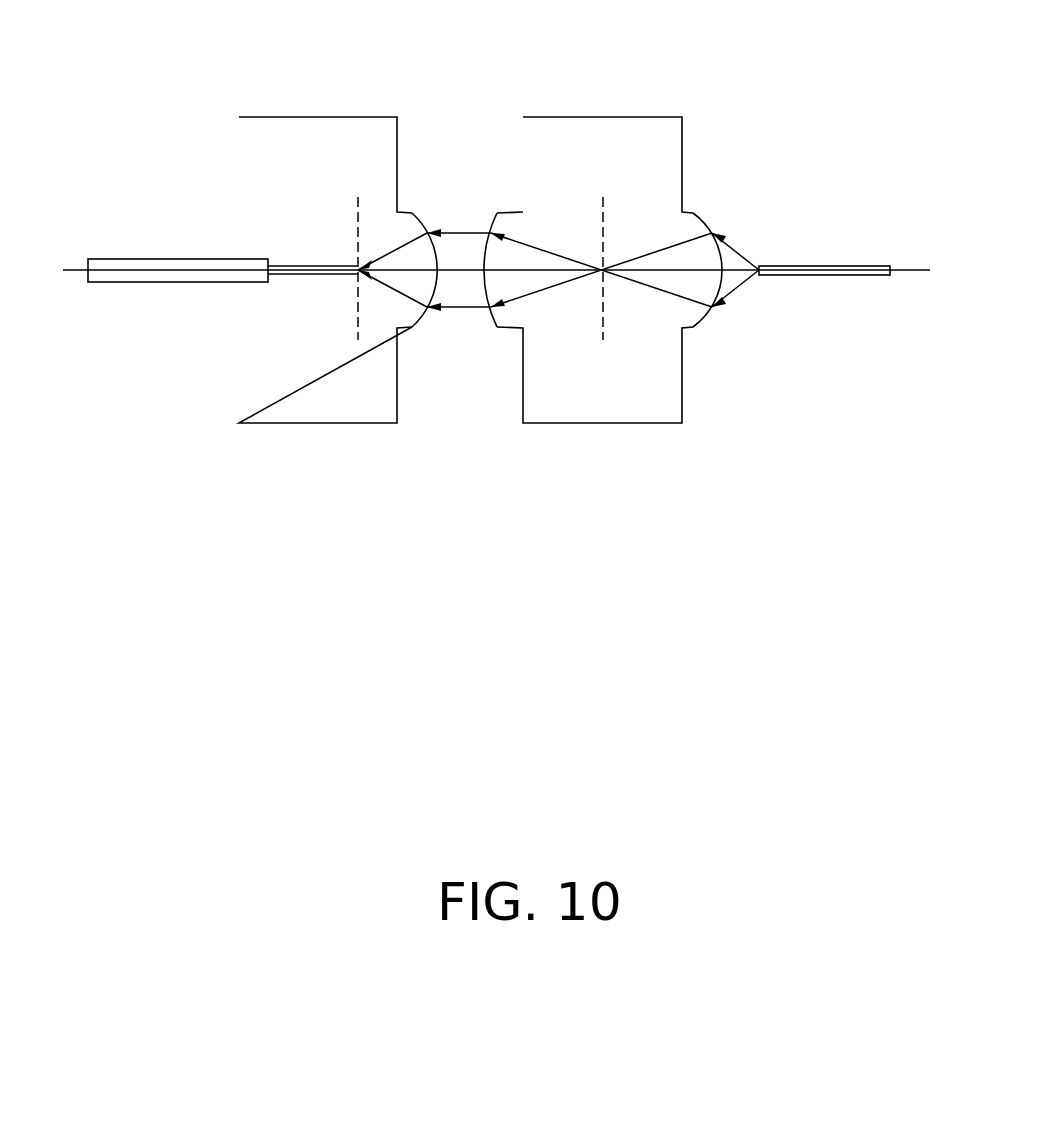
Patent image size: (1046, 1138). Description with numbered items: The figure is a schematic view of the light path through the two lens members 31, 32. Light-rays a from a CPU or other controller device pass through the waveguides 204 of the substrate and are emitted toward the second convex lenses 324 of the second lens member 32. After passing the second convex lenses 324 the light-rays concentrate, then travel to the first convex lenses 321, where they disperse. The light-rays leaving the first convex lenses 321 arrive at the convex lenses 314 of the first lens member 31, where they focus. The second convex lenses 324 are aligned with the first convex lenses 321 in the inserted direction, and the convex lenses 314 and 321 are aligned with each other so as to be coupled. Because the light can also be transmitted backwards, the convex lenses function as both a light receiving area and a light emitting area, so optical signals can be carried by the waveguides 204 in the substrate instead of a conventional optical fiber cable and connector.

The first lens member 31 is at (349, 150).
The second lens member 32 is at (618, 163).
The convex lens 314 is at (405, 228).
The first convex lens 321 is at (505, 257).
The second convex lens 324 is at (701, 257).
The waveguide 204 is at (815, 263).
The light-rays a is at (162, 267).